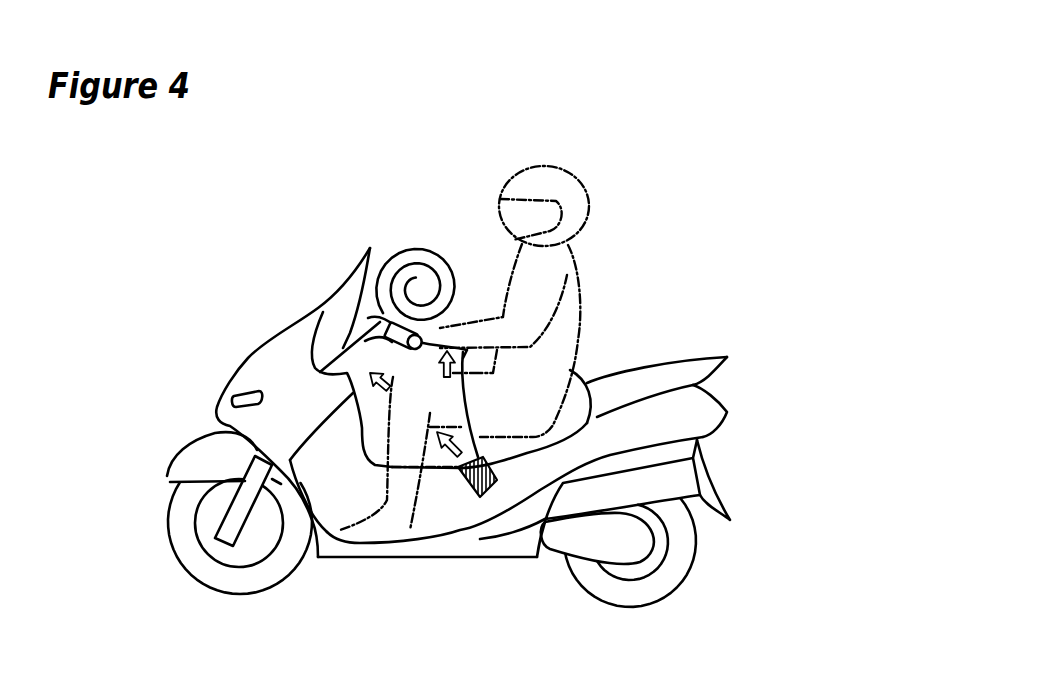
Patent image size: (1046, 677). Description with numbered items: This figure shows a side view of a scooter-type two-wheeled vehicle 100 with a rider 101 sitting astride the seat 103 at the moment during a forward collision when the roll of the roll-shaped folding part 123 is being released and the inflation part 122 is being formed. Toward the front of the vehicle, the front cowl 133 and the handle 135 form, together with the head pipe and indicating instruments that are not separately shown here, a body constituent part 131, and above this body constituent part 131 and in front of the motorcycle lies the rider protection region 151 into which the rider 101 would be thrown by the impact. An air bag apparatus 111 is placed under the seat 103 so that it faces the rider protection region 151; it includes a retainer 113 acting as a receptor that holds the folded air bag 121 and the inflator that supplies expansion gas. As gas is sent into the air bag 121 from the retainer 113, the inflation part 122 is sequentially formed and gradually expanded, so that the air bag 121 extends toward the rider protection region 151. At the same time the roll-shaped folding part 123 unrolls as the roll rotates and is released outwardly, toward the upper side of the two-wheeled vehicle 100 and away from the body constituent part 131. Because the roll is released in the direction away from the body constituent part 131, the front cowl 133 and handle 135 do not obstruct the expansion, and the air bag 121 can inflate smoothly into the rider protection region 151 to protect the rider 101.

The two-wheeled vehicle 100 is at (742, 392).
The rider 101 is at (583, 267).
The seat 103 is at (577, 373).
The air bag apparatus 111 is at (503, 497).
The retainer 113 is at (473, 492).
The air bag 121 is at (370, 232).
The inflation part 122 is at (462, 410).
The roll-shaped folding part 123 is at (407, 240).
The body constituent part 131 is at (347, 455).
The front cowl 133 is at (325, 300).
The handle 135 is at (372, 326).
The rider protection region 151 is at (440, 210).